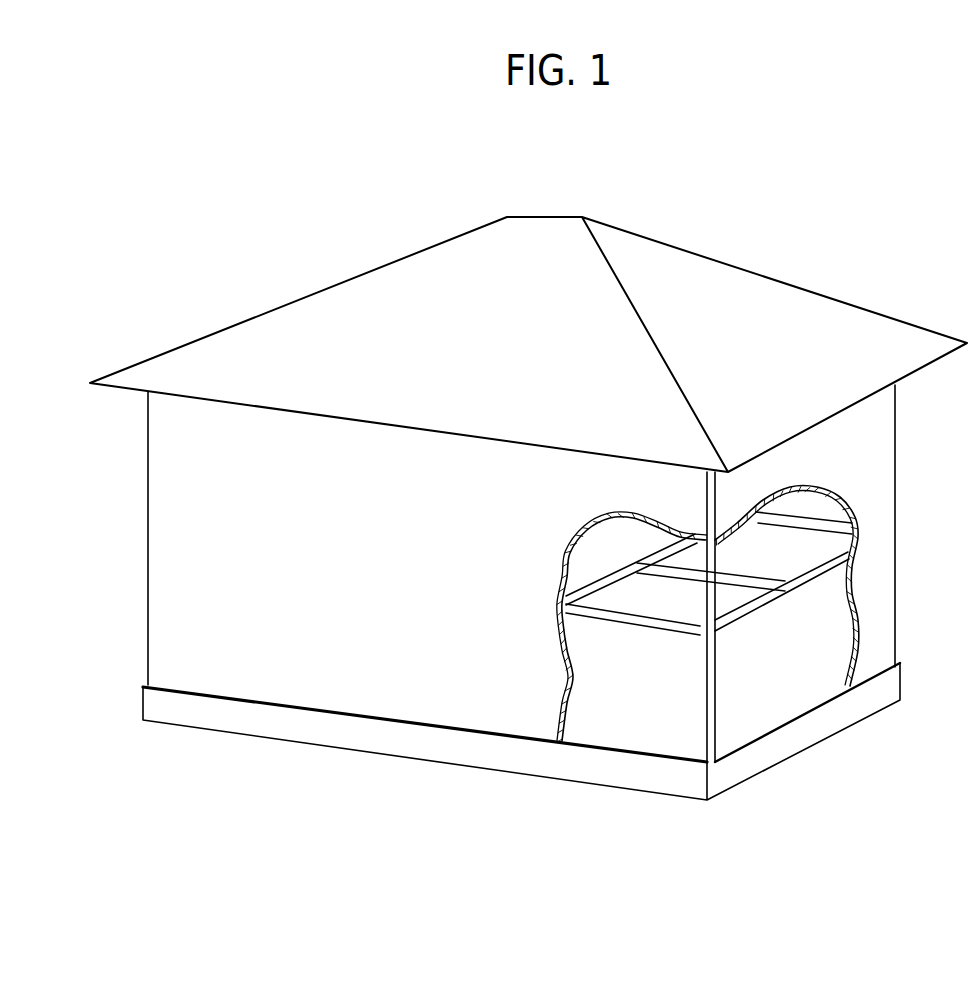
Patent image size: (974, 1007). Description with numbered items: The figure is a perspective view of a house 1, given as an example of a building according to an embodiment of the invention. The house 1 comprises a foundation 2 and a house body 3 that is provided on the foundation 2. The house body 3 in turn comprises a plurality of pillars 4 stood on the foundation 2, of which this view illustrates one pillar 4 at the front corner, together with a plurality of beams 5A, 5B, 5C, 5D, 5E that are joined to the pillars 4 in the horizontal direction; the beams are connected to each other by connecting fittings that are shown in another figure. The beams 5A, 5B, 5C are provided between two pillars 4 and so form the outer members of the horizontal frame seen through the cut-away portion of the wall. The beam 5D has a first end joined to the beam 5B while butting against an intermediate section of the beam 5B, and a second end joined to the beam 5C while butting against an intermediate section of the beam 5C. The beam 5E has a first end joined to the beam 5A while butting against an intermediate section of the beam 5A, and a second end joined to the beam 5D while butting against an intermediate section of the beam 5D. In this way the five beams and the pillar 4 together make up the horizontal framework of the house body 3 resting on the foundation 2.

The house 1 is at (826, 199).
The foundation 2 is at (157, 705).
The house body 3 is at (136, 529).
The pillar 4 is at (712, 727).
The beam 5A is at (767, 606).
The beam 5B is at (623, 634).
The beam 5C is at (817, 516).
The beam 5D is at (587, 584).
The beam 5E is at (738, 575).